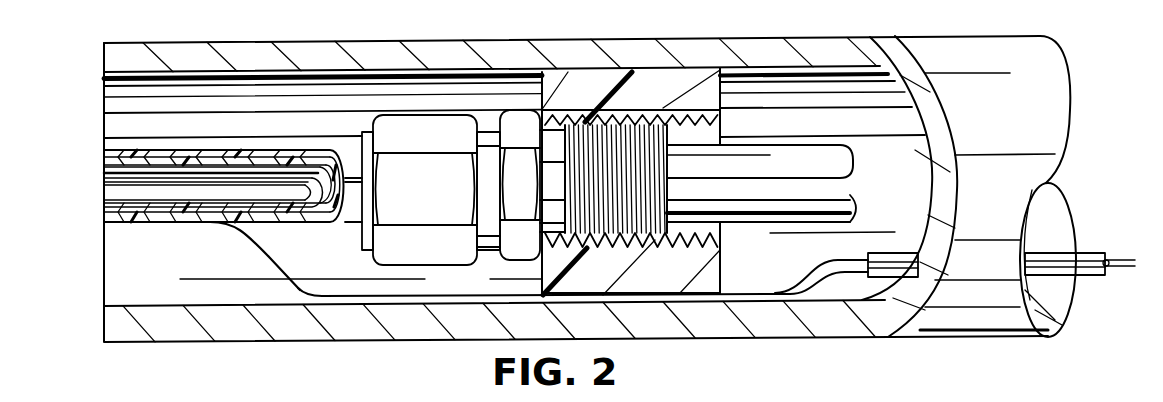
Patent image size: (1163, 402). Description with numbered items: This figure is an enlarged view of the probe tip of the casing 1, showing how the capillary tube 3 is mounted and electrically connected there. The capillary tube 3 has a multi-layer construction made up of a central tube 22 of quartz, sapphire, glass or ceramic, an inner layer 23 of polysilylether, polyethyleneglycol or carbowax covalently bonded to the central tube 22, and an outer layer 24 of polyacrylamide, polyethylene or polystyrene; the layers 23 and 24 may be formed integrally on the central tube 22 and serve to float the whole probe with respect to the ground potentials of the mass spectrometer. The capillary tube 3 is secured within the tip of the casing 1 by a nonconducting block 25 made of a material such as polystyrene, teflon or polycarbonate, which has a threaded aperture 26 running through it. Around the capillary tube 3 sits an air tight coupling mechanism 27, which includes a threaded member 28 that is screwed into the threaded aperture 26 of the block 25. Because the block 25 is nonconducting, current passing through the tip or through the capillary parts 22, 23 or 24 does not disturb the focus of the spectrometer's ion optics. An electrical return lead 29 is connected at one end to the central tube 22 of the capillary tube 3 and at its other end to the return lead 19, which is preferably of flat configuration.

The casing 1 is at (958, 37).
The capillary tube 3 is at (802, 157).
The return lead 19 is at (1097, 255).
The central tube 22 is at (115, 218).
The inner layer 23 is at (118, 192).
The outer layer 24 is at (118, 228).
The nonconducting block 25 is at (661, 85).
The threaded aperture 26 is at (722, 236).
The air tight coupling mechanism 27 is at (490, 262).
The threaded member 28 is at (626, 214).
The electrical return lead 29 is at (295, 277).